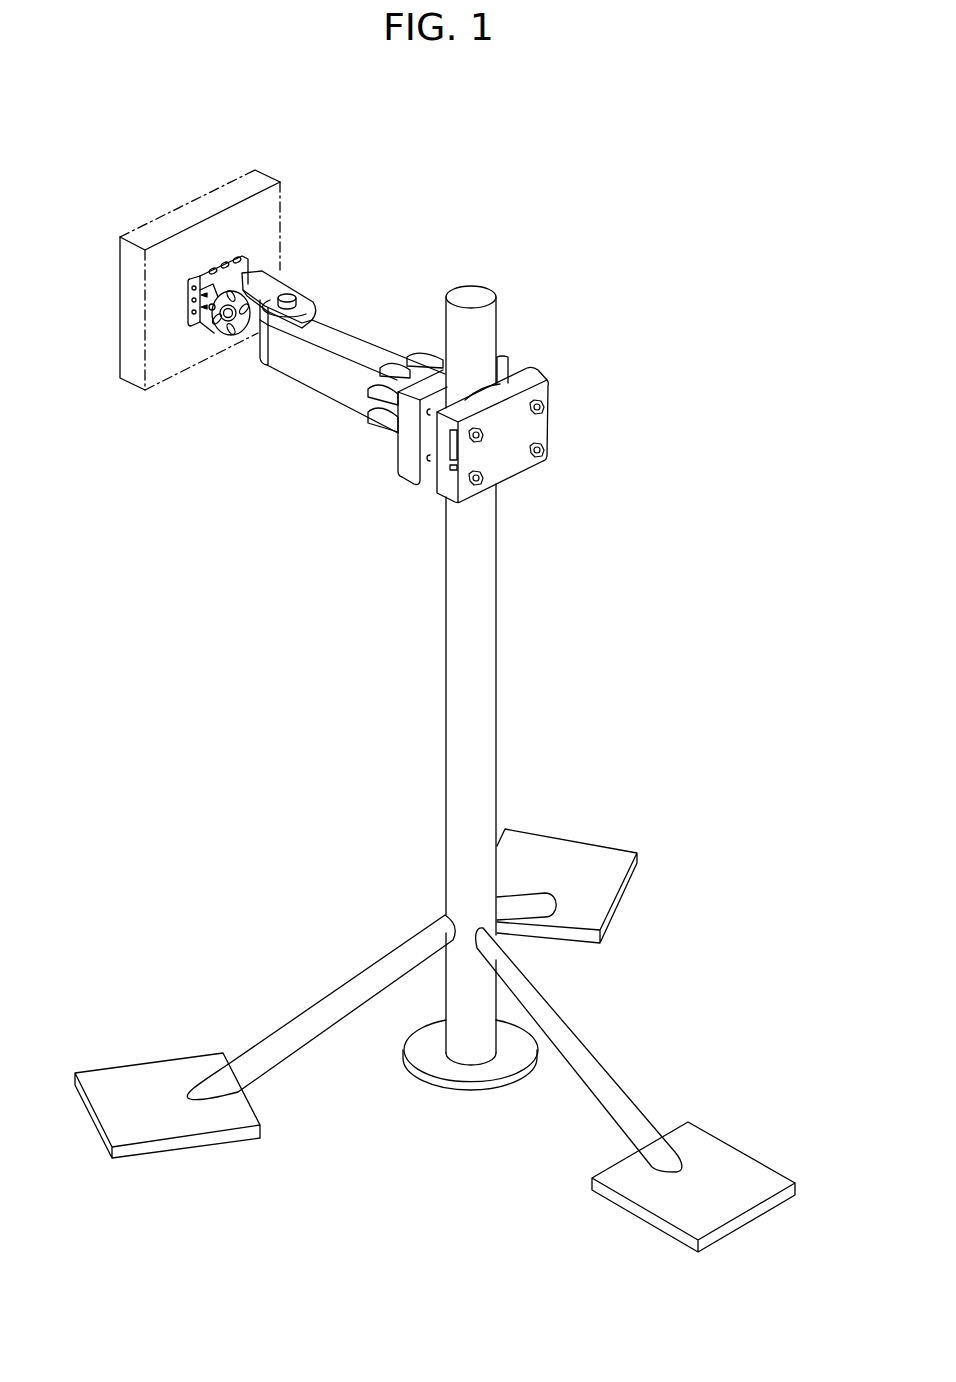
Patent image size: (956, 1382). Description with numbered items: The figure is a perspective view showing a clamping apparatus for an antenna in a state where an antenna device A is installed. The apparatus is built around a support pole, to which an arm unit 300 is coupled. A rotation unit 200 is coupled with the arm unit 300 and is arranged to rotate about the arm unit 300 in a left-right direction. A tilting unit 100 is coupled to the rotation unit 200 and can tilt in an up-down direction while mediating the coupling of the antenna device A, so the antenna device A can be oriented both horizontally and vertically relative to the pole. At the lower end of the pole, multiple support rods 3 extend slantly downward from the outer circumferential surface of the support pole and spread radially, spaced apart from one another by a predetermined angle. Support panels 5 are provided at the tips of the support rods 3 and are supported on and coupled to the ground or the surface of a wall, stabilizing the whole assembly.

The antenna device A is at (170, 220).
The tilting unit 100 is at (204, 330).
The rotation unit 200 is at (305, 283).
The arm unit 300 is at (373, 455).
The support rods 3 is at (528, 898).
The support panels 5 is at (584, 852).